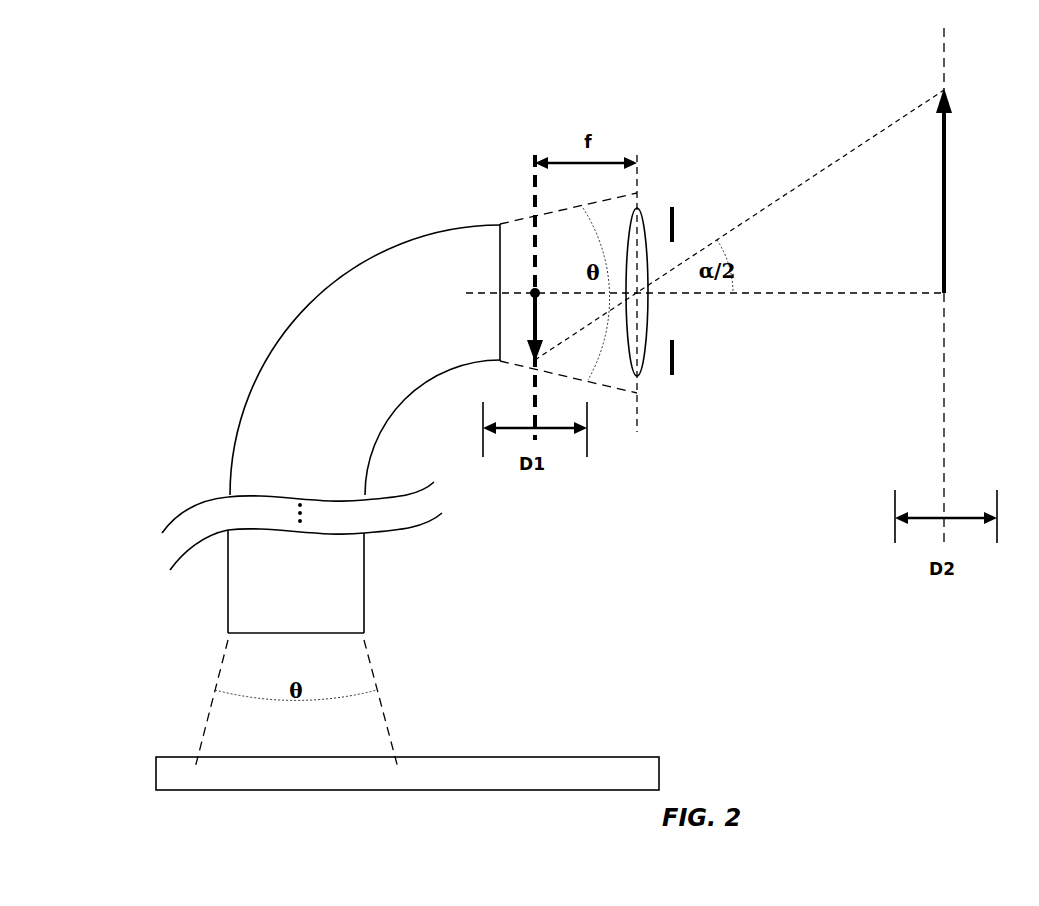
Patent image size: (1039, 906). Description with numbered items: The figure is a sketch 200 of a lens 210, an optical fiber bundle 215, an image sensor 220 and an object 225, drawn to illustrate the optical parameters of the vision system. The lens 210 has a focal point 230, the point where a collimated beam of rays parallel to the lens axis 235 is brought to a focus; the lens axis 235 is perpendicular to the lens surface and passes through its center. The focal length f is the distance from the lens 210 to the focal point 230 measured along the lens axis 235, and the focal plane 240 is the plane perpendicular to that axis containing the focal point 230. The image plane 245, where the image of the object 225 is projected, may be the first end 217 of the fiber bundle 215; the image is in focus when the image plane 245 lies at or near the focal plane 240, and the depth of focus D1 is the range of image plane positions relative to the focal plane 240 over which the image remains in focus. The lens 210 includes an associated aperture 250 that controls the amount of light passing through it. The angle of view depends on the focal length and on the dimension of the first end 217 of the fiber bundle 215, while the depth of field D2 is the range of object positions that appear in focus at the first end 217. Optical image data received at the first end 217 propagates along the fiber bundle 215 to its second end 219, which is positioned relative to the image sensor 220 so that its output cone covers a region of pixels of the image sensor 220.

The sketch 200 is at (217, 52).
The lens 210 is at (652, 199).
The optical fiber bundle 215 is at (330, 247).
The first end 217 is at (500, 278).
The second end 219 is at (298, 633).
The image sensor 220 is at (642, 783).
The object 225 is at (945, 183).
The focal point 230 is at (538, 290).
The lens axis 235 is at (845, 297).
The focal plane 240 is at (522, 169).
The image plane 245 is at (478, 324).
The aperture 250 is at (696, 325).